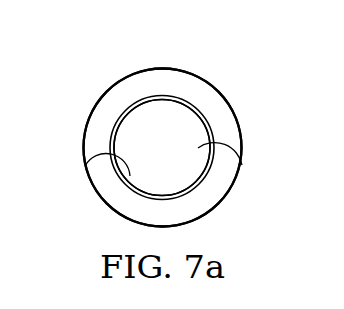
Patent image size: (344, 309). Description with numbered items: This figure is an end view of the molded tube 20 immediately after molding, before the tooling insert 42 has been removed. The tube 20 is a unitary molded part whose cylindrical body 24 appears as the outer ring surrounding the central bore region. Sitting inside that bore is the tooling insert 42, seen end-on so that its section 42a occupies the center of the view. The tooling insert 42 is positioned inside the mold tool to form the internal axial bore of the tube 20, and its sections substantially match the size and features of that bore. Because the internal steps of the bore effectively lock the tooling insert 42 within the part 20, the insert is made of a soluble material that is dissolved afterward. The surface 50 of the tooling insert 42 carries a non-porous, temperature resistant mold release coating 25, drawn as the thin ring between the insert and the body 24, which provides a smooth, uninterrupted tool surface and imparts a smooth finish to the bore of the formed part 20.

The tube 20 is at (209, 53).
The cylindrical body 24 is at (162, 78).
The mold release coating 25 is at (130, 108).
The surface 50 is at (85, 166).
The tooling insert 42 is at (180, 165).
The tooling insert section 42a is at (242, 165).